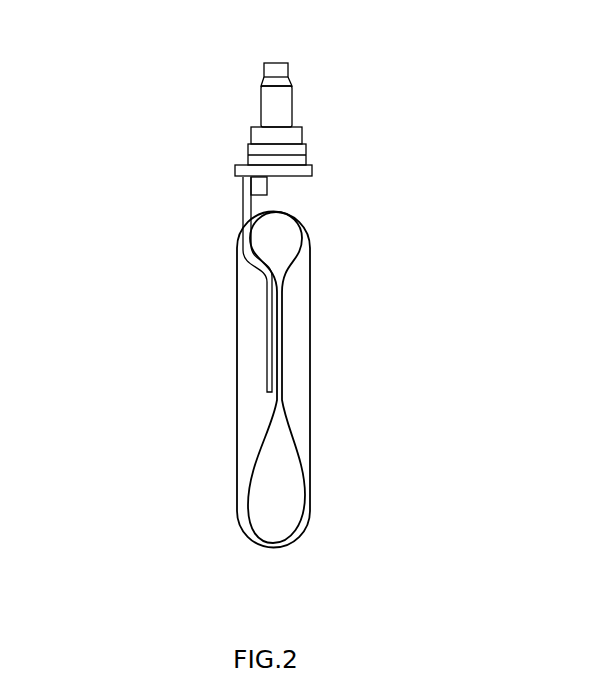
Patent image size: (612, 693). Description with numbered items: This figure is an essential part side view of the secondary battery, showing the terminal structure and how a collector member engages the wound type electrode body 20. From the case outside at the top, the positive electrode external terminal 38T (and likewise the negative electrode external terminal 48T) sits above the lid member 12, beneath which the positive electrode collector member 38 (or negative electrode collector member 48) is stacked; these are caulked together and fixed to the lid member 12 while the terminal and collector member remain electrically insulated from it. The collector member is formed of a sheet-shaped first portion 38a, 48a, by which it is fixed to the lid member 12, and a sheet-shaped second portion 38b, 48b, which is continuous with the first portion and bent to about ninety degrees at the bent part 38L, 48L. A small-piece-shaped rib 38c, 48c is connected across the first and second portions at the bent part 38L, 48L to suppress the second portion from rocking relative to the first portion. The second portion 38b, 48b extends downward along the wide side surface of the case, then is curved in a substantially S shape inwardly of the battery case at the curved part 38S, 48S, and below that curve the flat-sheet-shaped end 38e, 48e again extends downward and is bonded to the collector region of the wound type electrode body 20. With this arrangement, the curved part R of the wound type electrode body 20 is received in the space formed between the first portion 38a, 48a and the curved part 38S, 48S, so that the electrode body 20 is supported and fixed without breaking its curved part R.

The lid member 12 is at (312, 173).
The wound type electrode body 20 is at (309, 370).
The curved part R is at (303, 224).
The positive electrode collector member 38 is at (244, 297).
The negative electrode collector member 48 is at (132, 187).
The positive electrode external terminal 38T is at (328, 65).
The negative electrode external terminal 48T is at (283, 63).
The first portion 38a is at (355, 197).
The first portion 48a is at (299, 178).
The rib 38c is at (166, 230).
The rib 48c is at (255, 189).
The bent part 38L is at (175, 218).
The bent part 48L is at (239, 196).
The curved part 38S is at (189, 288).
The curved part 48S is at (246, 281).
The second portion 38b is at (184, 337).
The second portion 48b is at (267, 343).
The end 38e is at (184, 420).
The end 48e is at (267, 385).